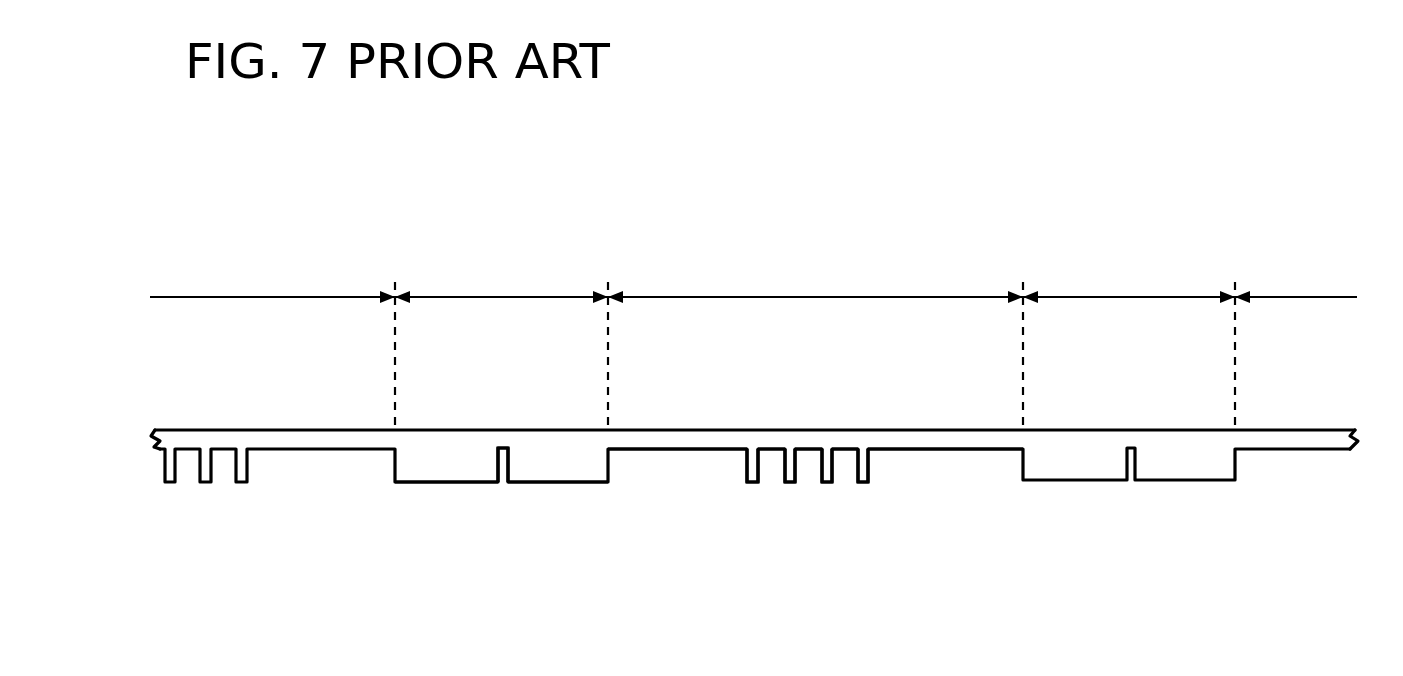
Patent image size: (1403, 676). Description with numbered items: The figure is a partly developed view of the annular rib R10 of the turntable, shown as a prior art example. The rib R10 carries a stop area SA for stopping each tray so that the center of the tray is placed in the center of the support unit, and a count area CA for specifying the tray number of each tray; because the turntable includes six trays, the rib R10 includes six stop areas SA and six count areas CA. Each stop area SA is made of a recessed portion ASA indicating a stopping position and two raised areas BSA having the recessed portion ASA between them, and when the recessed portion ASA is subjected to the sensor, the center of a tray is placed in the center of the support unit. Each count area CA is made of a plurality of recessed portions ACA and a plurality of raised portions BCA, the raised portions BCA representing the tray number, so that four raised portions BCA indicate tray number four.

The annular rib R10 is at (815, 153).
The count area CA is at (753, 280).
The stop area SA is at (815, 280).
The raised areas BSA is at (448, 474).
The recessed portion ASA is at (503, 484).
The raised portions BCA is at (746, 458).
The recessed portions ACA is at (657, 474).